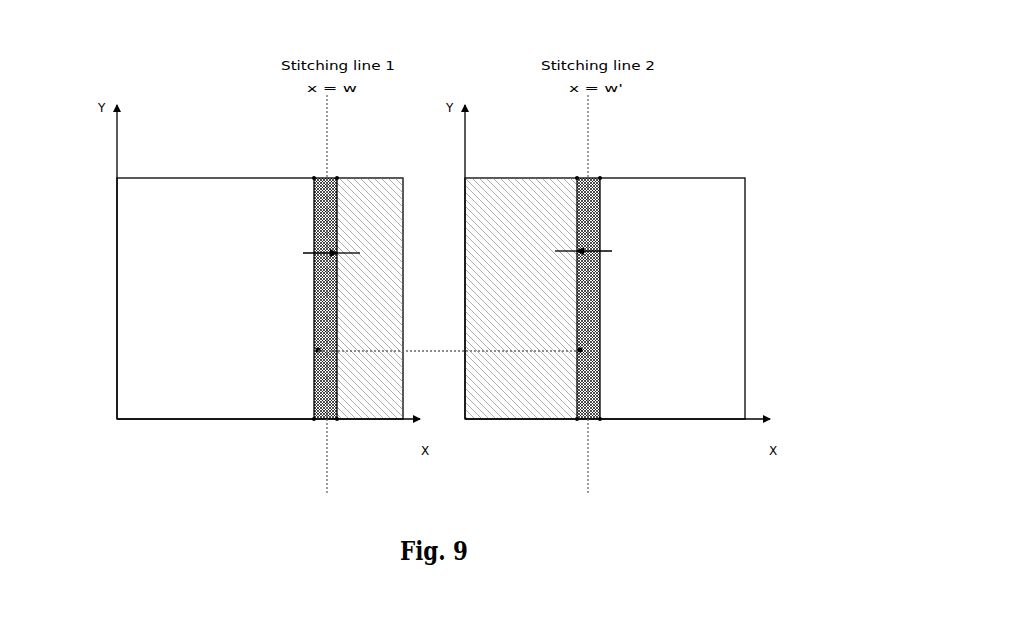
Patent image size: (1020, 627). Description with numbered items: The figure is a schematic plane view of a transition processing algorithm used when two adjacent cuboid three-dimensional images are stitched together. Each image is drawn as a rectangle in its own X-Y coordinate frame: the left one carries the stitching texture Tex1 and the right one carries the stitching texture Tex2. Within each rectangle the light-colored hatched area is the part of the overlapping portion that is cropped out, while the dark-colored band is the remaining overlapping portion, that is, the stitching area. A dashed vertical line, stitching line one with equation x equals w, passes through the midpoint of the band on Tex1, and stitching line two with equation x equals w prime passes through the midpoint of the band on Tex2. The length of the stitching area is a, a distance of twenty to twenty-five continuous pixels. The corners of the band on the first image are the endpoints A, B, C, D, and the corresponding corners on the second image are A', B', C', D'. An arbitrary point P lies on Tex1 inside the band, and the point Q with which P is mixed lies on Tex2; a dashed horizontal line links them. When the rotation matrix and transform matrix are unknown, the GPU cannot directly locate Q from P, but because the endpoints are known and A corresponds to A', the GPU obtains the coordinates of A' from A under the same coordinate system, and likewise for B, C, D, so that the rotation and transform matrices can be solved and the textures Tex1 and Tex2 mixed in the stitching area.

The endpoint A is at (309, 171).
The endpoint B is at (340, 171).
The endpoint C is at (309, 431).
The endpoint D is at (342, 431).
The endpoint A' is at (571, 171).
The endpoint B' is at (606, 171).
The endpoint C' is at (570, 431).
The endpoint D' is at (607, 431).
The point P is at (318, 350).
The point Q is at (582, 350).
The length of the stitching area a is at (329, 247).
The texture Tex1 is at (260, 298).
The texture Tex2 is at (605, 298).